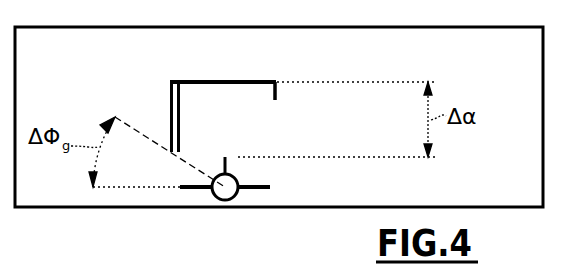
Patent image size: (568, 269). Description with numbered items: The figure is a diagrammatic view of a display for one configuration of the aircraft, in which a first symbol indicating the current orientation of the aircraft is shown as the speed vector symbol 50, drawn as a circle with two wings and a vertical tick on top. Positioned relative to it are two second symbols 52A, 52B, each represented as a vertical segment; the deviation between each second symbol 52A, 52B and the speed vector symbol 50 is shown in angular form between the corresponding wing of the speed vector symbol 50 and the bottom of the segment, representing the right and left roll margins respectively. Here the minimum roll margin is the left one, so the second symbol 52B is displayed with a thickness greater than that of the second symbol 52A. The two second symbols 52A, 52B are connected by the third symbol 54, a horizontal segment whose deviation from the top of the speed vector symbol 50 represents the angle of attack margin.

The speed vector symbol 50 is at (237, 192).
The second symbol 52A is at (272, 92).
The second symbol 52B is at (168, 108).
The third symbol 54 is at (188, 81).